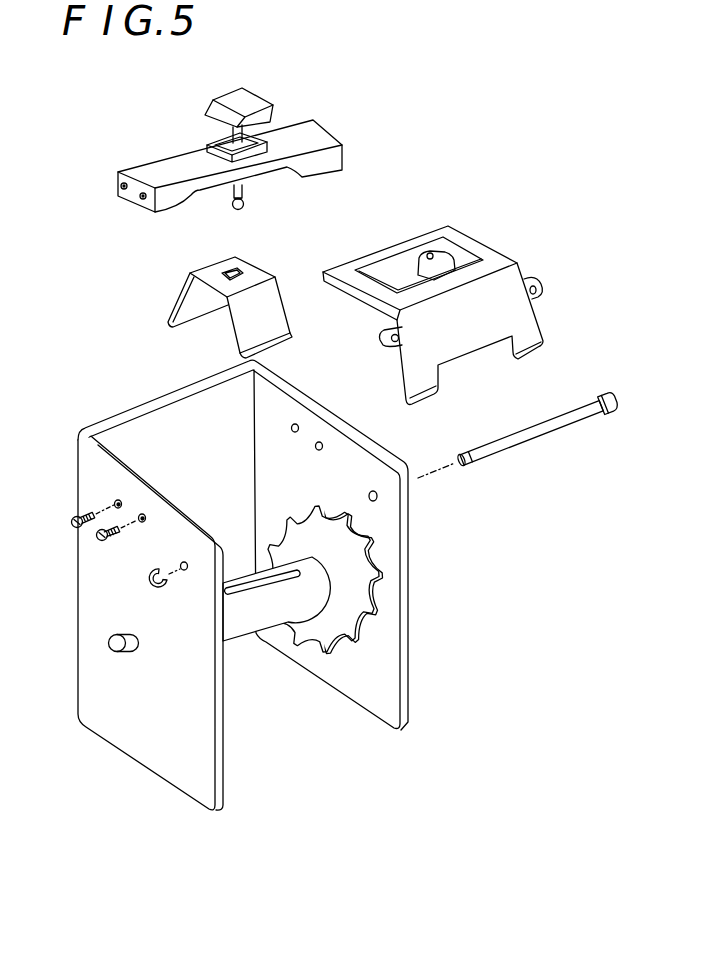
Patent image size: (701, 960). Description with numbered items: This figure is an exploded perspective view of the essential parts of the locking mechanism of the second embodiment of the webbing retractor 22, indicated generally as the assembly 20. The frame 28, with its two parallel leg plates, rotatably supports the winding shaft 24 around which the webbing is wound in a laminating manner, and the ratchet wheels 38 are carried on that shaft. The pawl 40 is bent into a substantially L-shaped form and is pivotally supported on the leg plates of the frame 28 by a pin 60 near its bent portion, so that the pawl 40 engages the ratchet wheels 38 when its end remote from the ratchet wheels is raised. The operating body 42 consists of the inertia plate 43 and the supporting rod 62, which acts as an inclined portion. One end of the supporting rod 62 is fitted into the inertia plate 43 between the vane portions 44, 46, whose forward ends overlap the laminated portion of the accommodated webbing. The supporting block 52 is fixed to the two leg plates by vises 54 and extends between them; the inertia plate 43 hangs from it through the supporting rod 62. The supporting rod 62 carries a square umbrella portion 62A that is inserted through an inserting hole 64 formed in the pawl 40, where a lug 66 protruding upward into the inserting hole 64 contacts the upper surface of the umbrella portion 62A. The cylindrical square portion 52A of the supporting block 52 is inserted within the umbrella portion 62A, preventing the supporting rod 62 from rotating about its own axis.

The sprinkler head assembly 20 is at (467, 158).
The webbing retractor 22 is at (68, 385).
The winding shaft 24 is at (247, 618).
The frame 28 is at (156, 420).
The ratchet wheels 38 is at (384, 585).
The pawl 40 is at (515, 282).
The operating body 42 is at (310, 187).
The inertia plate 43 is at (257, 277).
The vane portion 44 is at (183, 300).
The vane portion 46 is at (281, 336).
The supporting block 52 is at (312, 140).
The cylindrical square portion 52A is at (209, 143).
The vises 54 is at (71, 521).
The pin 60 is at (533, 428).
The supporting rod 62 is at (246, 187).
The square umbrella portion 62A is at (252, 103).
The inserting hole 64 is at (397, 265).
The lug 66 is at (442, 258).